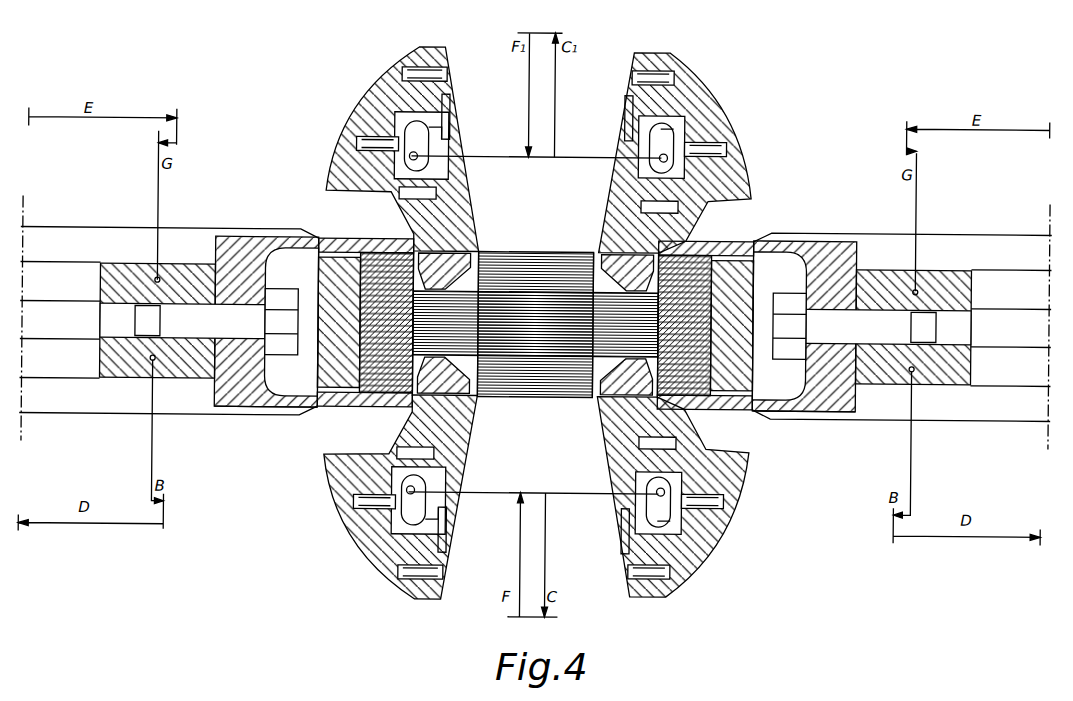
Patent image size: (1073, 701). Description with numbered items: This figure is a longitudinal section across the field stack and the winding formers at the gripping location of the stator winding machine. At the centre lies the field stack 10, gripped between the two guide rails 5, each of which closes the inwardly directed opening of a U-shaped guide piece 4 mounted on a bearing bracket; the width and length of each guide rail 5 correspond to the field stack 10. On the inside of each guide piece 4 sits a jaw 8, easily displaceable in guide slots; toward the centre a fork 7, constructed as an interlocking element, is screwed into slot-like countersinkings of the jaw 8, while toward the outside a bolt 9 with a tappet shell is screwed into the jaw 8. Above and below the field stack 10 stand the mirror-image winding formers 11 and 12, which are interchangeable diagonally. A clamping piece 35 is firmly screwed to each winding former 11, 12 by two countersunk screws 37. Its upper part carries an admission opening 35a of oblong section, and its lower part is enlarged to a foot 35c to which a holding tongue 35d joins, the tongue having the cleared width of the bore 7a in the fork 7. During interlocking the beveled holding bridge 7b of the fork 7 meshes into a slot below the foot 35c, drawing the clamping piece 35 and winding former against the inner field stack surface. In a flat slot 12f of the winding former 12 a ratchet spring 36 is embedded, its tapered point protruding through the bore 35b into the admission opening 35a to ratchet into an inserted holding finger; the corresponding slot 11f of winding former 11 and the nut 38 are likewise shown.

The guide piece 4 is at (99, 238).
The guide rail 5 is at (343, 260).
The fork 7 is at (229, 245).
The bore 7a is at (400, 407).
The holding bridge 7b is at (456, 243).
The jaw 8 is at (138, 267).
The bolt 9 is at (60, 305).
The field stack 10 is at (562, 252).
The winding former 11 is at (360, 124).
The flyweight stop screw 11f is at (410, 73).
The winding former 12 is at (705, 108).
The flat slot 12f is at (400, 567).
The clamping piece 35 is at (358, 107).
The admission opening 35a is at (450, 105).
The bore 35b is at (432, 137).
The foot 35c is at (453, 230).
The holding tongue 35d is at (387, 405).
The ratchet spring 36 is at (434, 117).
The countersunk screw 37 is at (435, 192).
The nut 38 is at (278, 300).